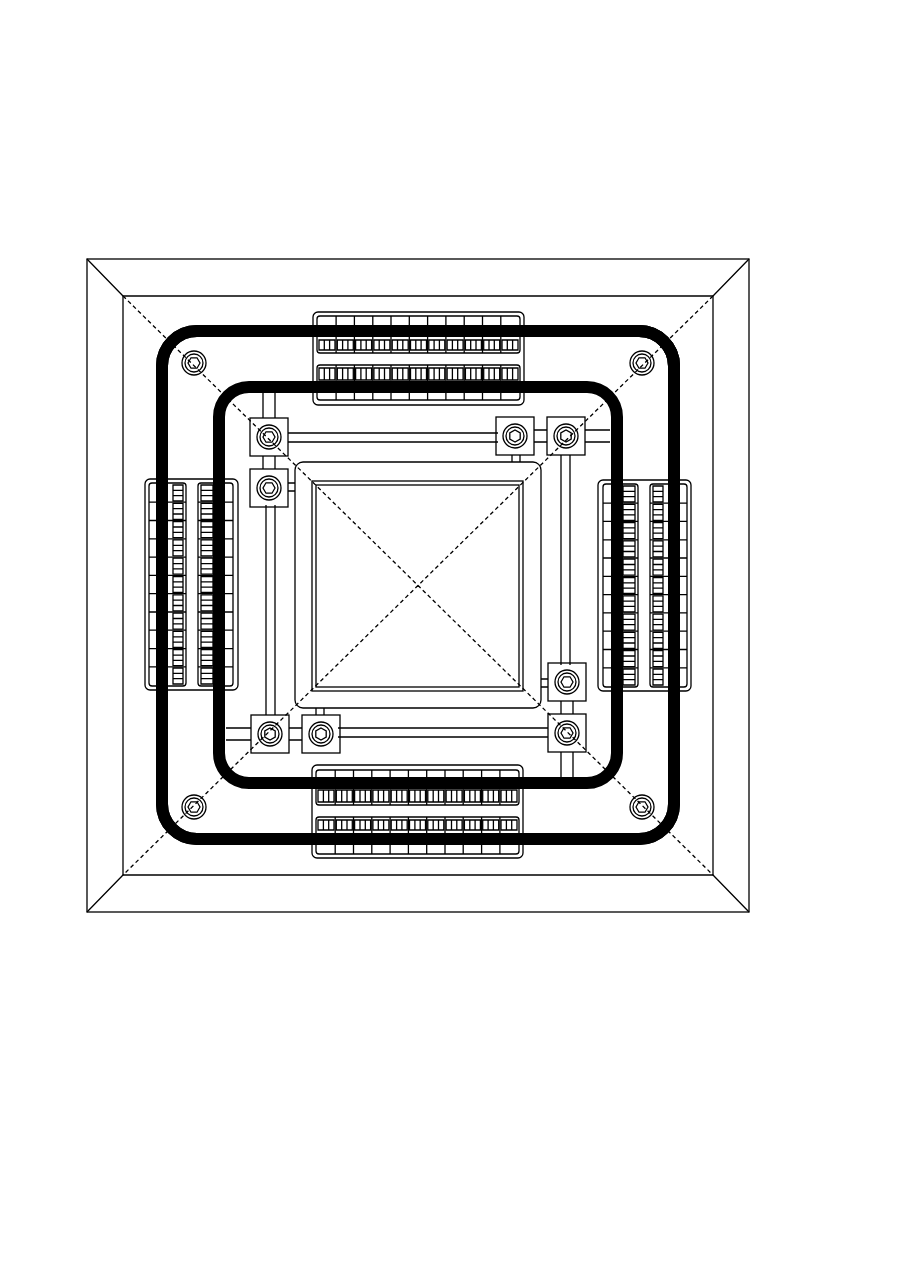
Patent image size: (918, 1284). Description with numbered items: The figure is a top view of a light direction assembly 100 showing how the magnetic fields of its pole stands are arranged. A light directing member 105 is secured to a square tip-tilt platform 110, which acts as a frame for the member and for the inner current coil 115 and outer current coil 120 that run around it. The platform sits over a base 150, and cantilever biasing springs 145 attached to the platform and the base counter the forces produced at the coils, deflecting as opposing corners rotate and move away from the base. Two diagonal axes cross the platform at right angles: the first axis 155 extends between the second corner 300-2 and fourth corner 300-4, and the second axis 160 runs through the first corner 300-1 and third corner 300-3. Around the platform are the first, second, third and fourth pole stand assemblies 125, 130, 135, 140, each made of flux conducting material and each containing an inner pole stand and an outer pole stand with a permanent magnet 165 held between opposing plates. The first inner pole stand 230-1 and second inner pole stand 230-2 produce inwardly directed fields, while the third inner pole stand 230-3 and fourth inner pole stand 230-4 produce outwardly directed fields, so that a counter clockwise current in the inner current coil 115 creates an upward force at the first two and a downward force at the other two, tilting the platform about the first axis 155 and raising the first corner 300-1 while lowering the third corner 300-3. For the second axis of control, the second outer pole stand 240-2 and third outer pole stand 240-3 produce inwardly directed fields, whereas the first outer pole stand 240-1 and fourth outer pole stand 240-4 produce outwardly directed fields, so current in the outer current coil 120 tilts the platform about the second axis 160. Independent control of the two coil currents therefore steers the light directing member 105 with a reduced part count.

The light direction assembly 100 is at (234, 66).
The light directing member 105 is at (436, 531).
The tip-tilt platform 110 is at (420, 558).
The inner current coil 115 is at (157, 375).
The outer current coil 120 is at (155, 400).
The first pole stand assembly 125 is at (716, 588).
The second pole stand assembly 130 is at (415, 283).
The third pole stand assembly 135 is at (120, 589).
The fourth pole stand assembly 140 is at (420, 868).
The biasing spring 145 is at (290, 428).
The base 150 is at (455, 259).
The first axis 155 is at (158, 320).
The second axis 160 is at (678, 328).
The permanent magnet 165 is at (530, 328).
The first inner pole stand 230-1 is at (629, 463).
The second inner pole stand 230-2 is at (536, 371).
The third inner pole stand 230-3 is at (200, 469).
The fourth inner pole stand 230-4 is at (299, 800).
The first outer pole stand 240-1 is at (694, 702).
The second outer pole stand 240-2 is at (348, 302).
The third outer pole stand 240-3 is at (144, 702).
The fourth outer pole stand 240-4 is at (527, 864).
The first corner 300-1 is at (673, 335).
The second corner 300-2 is at (157, 333).
The third corner 300-3 is at (122, 877).
The fourth corner 300-4 is at (710, 877).